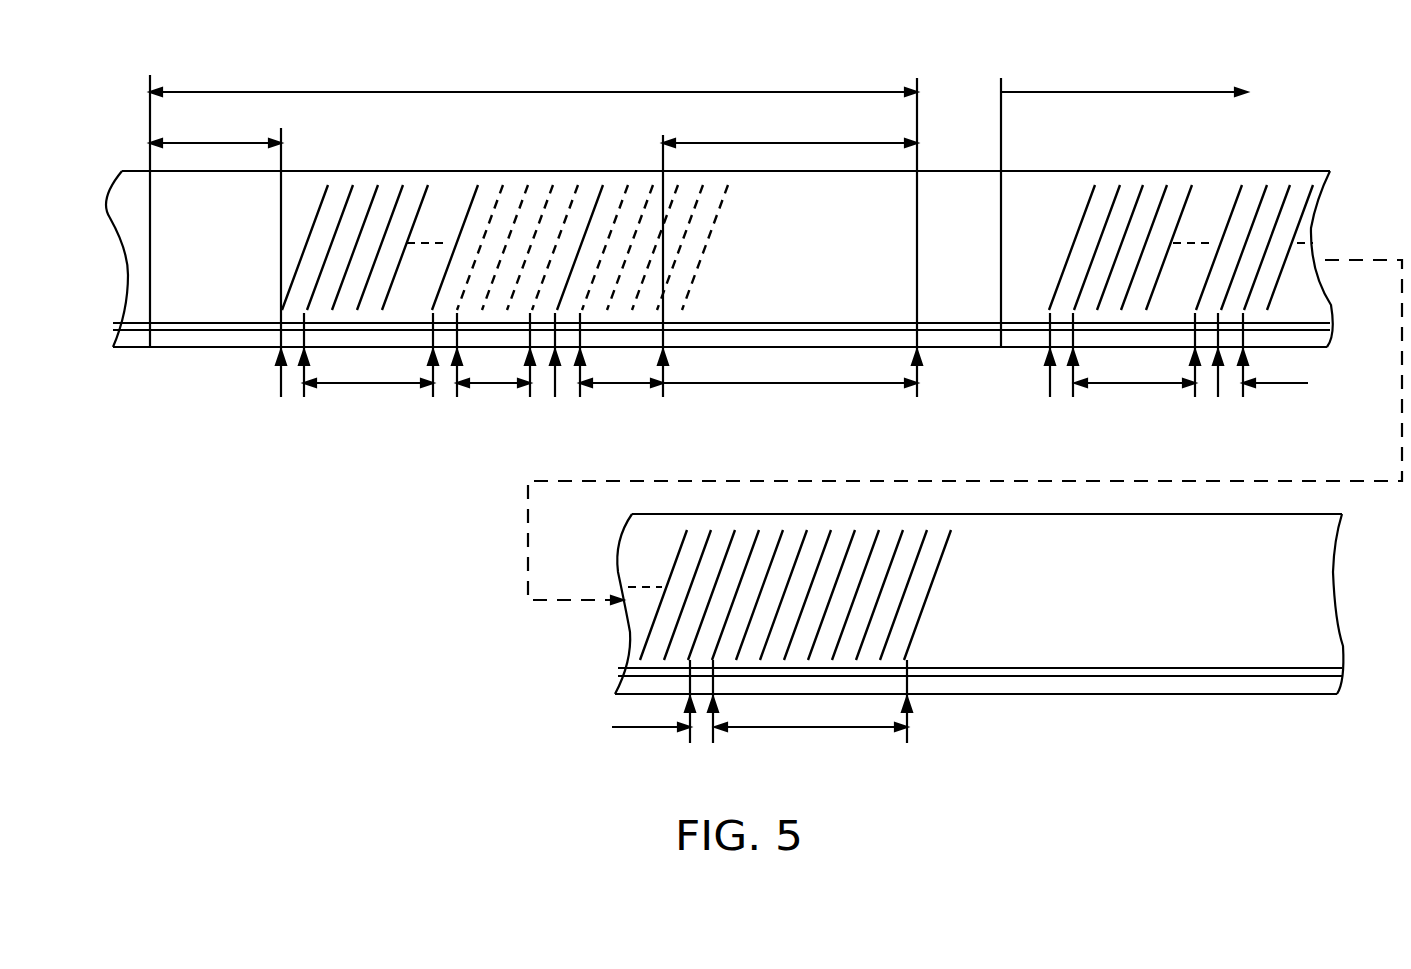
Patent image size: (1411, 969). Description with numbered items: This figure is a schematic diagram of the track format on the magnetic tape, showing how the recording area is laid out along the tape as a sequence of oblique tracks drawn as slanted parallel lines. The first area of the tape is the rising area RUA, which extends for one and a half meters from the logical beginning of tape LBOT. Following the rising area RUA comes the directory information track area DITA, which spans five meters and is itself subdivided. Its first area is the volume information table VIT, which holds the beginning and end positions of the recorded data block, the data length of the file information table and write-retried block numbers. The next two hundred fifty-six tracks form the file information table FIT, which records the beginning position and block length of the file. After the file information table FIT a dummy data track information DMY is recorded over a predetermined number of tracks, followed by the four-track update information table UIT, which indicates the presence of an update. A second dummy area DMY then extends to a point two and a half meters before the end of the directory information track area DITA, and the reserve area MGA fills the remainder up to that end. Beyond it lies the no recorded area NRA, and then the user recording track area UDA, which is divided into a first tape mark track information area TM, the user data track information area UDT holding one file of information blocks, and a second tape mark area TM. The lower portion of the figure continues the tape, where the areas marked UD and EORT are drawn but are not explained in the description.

The logical beginning of tape LBOT is at (164, 196).
The directory information track area DITA is at (527, 92).
The user recording track area UDA is at (1143, 72).
The rising area RUA is at (222, 310).
The volume information table VIT is at (287, 373).
The file information table FIT is at (380, 383).
The dummy data track information DMY is at (495, 383).
The update information table UIT is at (560, 372).
The reserve area MGA is at (800, 383).
The no recorded area NRA is at (967, 310).
The tape mark track information area TM is at (1138, 374).
The user data track information area UDT is at (1135, 383).
The user data UD is at (640, 727).
The end of recorded tape EORT is at (822, 727).